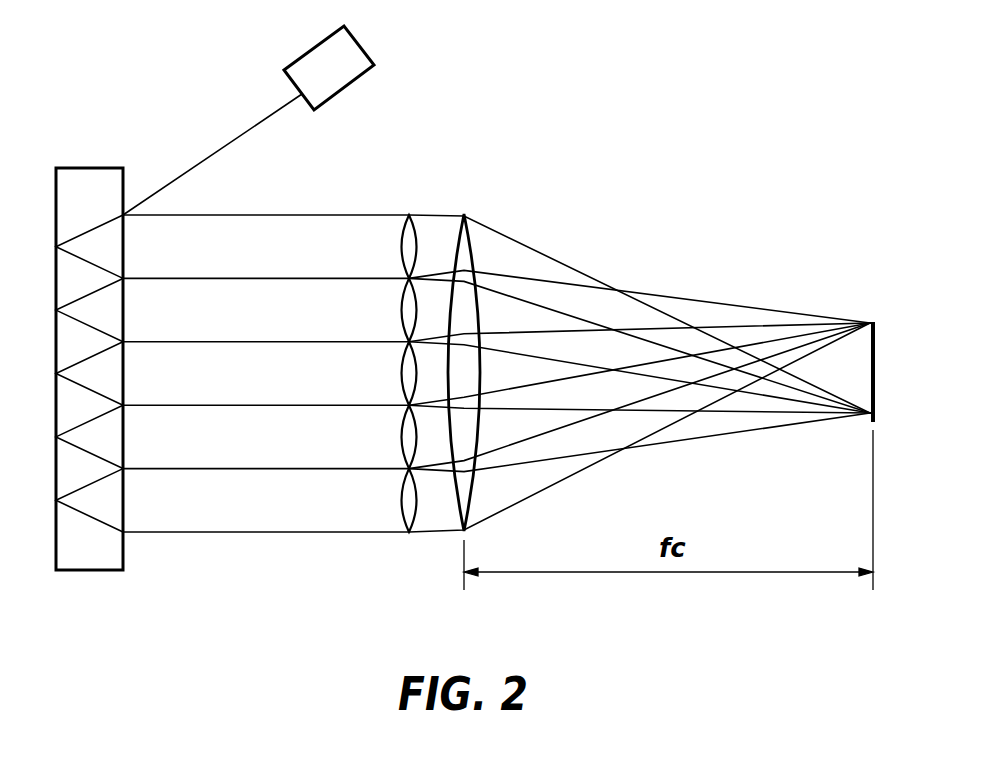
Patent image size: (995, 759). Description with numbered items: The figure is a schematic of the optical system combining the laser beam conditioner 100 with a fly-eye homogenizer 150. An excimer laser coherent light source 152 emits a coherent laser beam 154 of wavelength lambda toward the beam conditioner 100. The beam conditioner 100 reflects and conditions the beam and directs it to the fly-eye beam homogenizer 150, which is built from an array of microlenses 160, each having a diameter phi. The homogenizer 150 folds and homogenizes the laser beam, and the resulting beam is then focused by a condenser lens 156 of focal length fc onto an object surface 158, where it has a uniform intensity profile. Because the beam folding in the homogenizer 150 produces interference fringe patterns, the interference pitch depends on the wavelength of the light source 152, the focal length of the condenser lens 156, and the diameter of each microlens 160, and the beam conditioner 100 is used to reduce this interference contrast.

The laser beam conditioner 100 is at (92, 168).
The fly-eye beam homogenizer 150 is at (368, 399).
The excimer laser coherent light source 152 is at (347, 88).
The coherent laser beam 154 is at (208, 157).
The condenser lens 156 is at (470, 528).
The object surface 158 is at (880, 338).
The microlens 160 is at (403, 502).